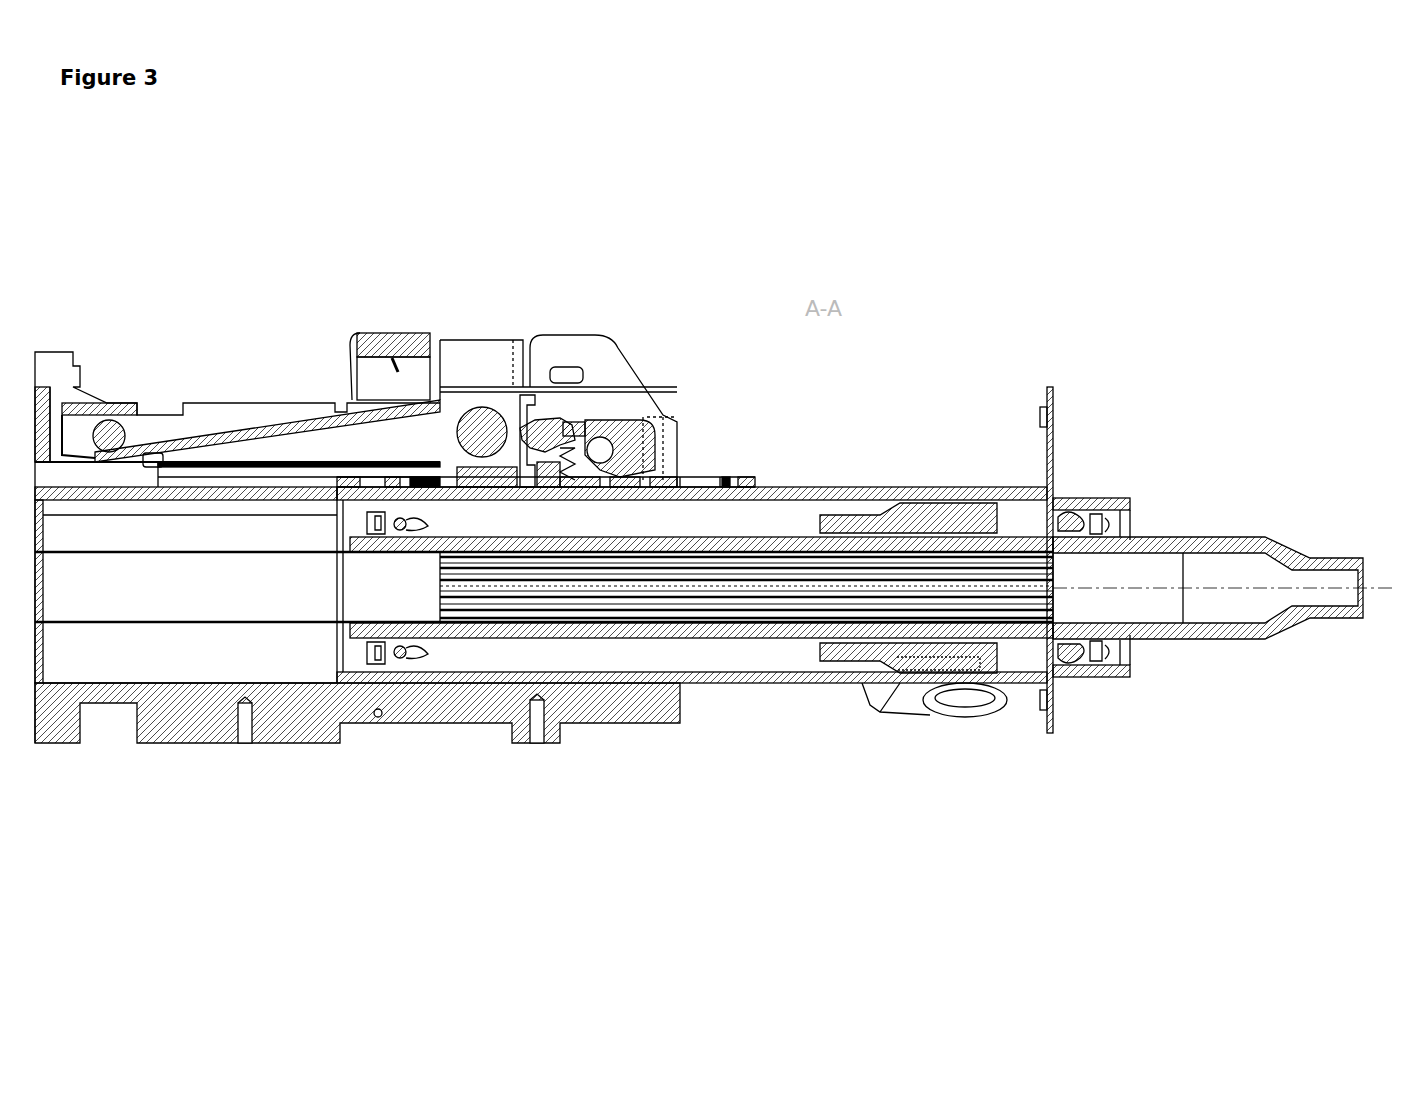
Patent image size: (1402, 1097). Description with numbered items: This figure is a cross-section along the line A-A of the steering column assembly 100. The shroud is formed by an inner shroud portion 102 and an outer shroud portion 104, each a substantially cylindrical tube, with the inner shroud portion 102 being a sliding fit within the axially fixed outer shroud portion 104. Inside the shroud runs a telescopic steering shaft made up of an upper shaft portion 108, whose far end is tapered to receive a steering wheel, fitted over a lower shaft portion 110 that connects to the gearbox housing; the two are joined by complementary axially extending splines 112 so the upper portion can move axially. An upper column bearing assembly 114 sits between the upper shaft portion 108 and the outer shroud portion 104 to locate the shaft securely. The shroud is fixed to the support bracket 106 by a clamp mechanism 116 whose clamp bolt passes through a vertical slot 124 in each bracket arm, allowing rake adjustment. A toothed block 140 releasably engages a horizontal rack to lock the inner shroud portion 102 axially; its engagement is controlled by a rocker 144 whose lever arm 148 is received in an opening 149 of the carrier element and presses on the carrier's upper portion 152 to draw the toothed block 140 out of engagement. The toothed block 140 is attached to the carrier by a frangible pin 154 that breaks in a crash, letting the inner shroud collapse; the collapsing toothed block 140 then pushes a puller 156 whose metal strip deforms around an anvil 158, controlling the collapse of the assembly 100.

The steering column assembly 100 is at (1003, 232).
The inner shroud portion 102 is at (1003, 483).
The outer shroud portion 104 is at (275, 748).
The support bracket 106 is at (366, 320).
The upper shaft portion 108 is at (1192, 532).
The lower shaft portion 110 is at (180, 627).
The axially extending splines 112 is at (456, 607).
The upper column bearing assembly 114 is at (1052, 657).
The clamp mechanism 116 is at (546, 400).
The vertical slot 124 is at (590, 378).
The toothed block 140 is at (526, 497).
The rocker 144 is at (611, 413).
The lever arm 148 is at (562, 432).
The opening 149 is at (578, 430).
The upper portion 152 is at (558, 430).
The frangible pin 154 is at (547, 472).
The puller 156 is at (485, 485).
The anvil 158 is at (470, 428).